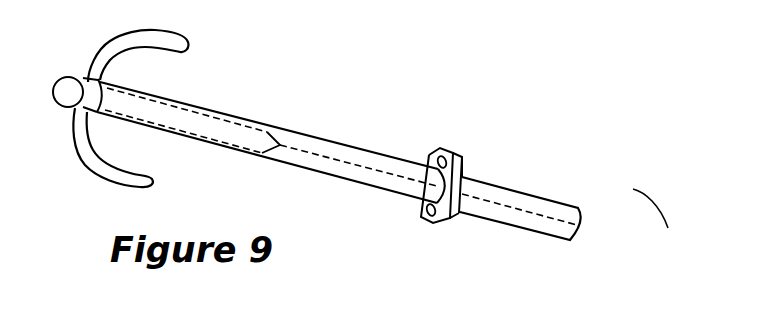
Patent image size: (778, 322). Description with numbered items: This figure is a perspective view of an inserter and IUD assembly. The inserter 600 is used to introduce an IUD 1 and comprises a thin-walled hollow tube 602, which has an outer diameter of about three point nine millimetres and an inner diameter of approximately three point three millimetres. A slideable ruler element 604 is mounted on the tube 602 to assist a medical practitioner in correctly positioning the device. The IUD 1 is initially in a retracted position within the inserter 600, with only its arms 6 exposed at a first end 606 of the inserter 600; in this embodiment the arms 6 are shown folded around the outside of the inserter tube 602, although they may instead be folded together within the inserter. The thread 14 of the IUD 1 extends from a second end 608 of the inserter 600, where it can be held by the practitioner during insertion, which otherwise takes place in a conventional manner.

The IUD 1 is at (368, 135).
The arms 6 is at (140, 47).
The first end 606 is at (101, 124).
The inserter 600 is at (220, 148).
The thin-walled hollow tube 602 is at (323, 139).
The slideable ruler element 604 is at (465, 161).
The second end 608 is at (552, 200).
The thread 14 is at (585, 226).